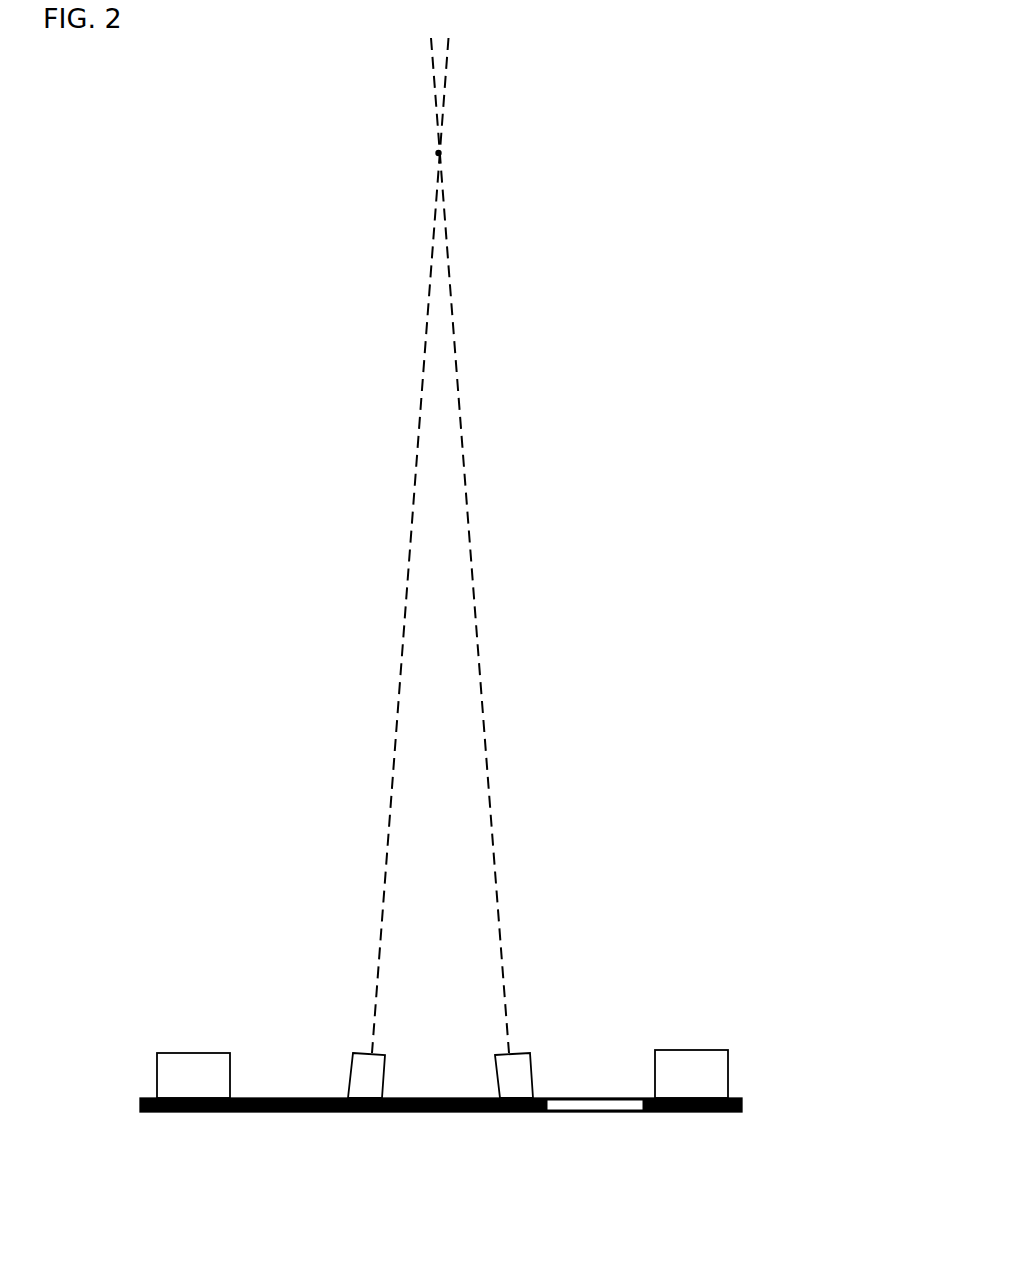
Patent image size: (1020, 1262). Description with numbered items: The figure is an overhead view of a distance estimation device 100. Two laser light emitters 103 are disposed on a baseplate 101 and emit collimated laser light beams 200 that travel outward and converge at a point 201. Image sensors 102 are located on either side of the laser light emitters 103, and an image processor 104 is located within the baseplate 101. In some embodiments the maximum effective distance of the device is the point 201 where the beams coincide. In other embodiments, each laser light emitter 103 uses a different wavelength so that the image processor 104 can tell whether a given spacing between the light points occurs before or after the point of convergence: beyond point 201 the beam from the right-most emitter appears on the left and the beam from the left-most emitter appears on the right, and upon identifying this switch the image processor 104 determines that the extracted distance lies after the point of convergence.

The distance estimation device 100 is at (713, 178).
The baseplate 101 is at (312, 1112).
The image sensors 102 is at (157, 1080).
The laser light emitters 103 is at (352, 1072).
The image processor 104 is at (592, 1112).
The collimated laser light beams 200 is at (441, 545).
The point of convergence 201 is at (464, 154).